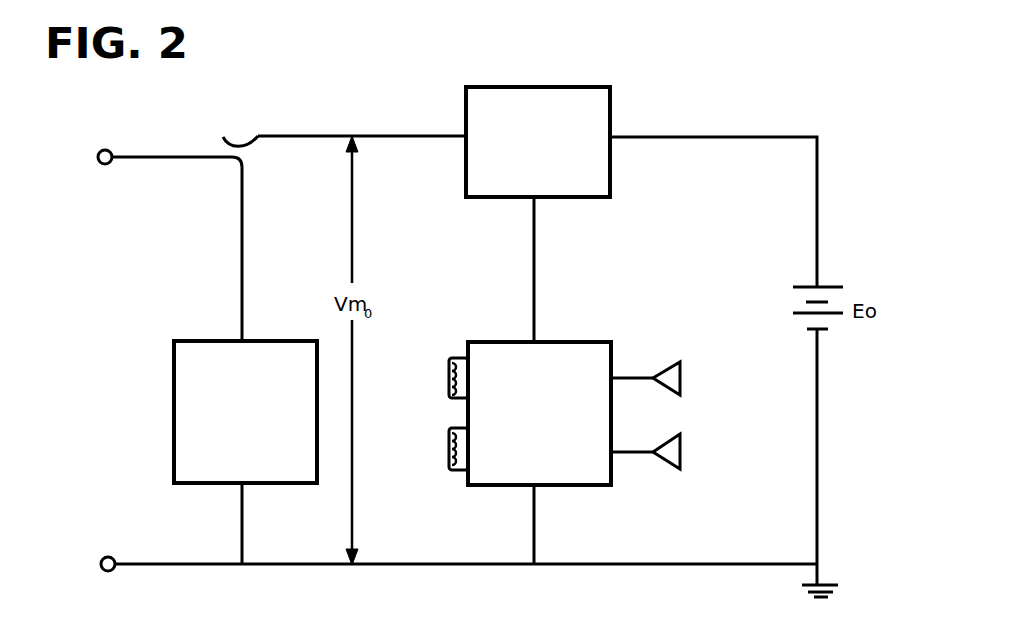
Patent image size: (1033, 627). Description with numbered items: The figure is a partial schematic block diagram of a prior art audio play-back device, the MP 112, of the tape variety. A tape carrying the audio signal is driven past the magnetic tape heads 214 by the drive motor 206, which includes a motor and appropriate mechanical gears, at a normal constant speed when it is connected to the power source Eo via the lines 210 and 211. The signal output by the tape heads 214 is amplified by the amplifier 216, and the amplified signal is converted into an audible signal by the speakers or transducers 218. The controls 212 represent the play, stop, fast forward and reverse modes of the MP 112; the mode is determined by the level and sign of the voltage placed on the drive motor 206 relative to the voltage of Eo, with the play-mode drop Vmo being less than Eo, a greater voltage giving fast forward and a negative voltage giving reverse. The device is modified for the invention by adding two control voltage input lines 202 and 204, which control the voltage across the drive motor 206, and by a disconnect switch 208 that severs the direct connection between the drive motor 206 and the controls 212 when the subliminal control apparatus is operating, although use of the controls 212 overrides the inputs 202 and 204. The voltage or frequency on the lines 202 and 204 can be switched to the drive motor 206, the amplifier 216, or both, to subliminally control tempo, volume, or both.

The MP 112 is at (778, 91).
The control voltage input line 202 is at (167, 158).
The control voltage input line 204 is at (170, 562).
The drive motor 206 is at (202, 342).
The disconnect switch 208 is at (219, 149).
The line 210 is at (818, 483).
The line 211 is at (298, 135).
The controls 212 is at (611, 102).
The magnetic tape heads 214 is at (448, 452).
The amplifier 216 is at (612, 358).
The speakers or transducers 218 is at (680, 377).